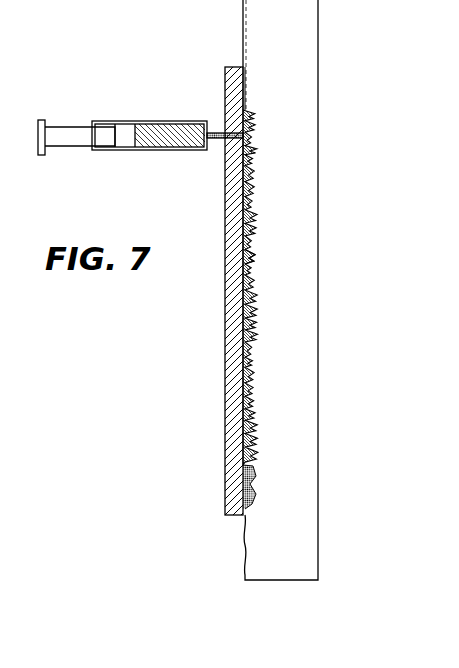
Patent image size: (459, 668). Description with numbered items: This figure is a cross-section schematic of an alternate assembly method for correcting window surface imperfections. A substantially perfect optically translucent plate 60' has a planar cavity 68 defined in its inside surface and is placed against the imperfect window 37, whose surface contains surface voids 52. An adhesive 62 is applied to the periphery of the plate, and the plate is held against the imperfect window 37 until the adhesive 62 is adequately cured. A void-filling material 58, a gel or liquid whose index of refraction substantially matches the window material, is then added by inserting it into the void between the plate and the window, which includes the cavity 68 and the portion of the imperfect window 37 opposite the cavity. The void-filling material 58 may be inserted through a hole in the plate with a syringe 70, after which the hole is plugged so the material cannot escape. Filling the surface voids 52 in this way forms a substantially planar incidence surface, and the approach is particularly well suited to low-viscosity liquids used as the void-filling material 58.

The imperfect window 37 is at (300, 572).
The surface voids 52 is at (255, 262).
The void-filling material 58 is at (248, 402).
The substantially perfect optically translucent plate 60' is at (205, 55).
The adhesive 62 is at (245, 88).
The planar cavity 68 is at (228, 307).
The syringe 70 is at (142, 150).